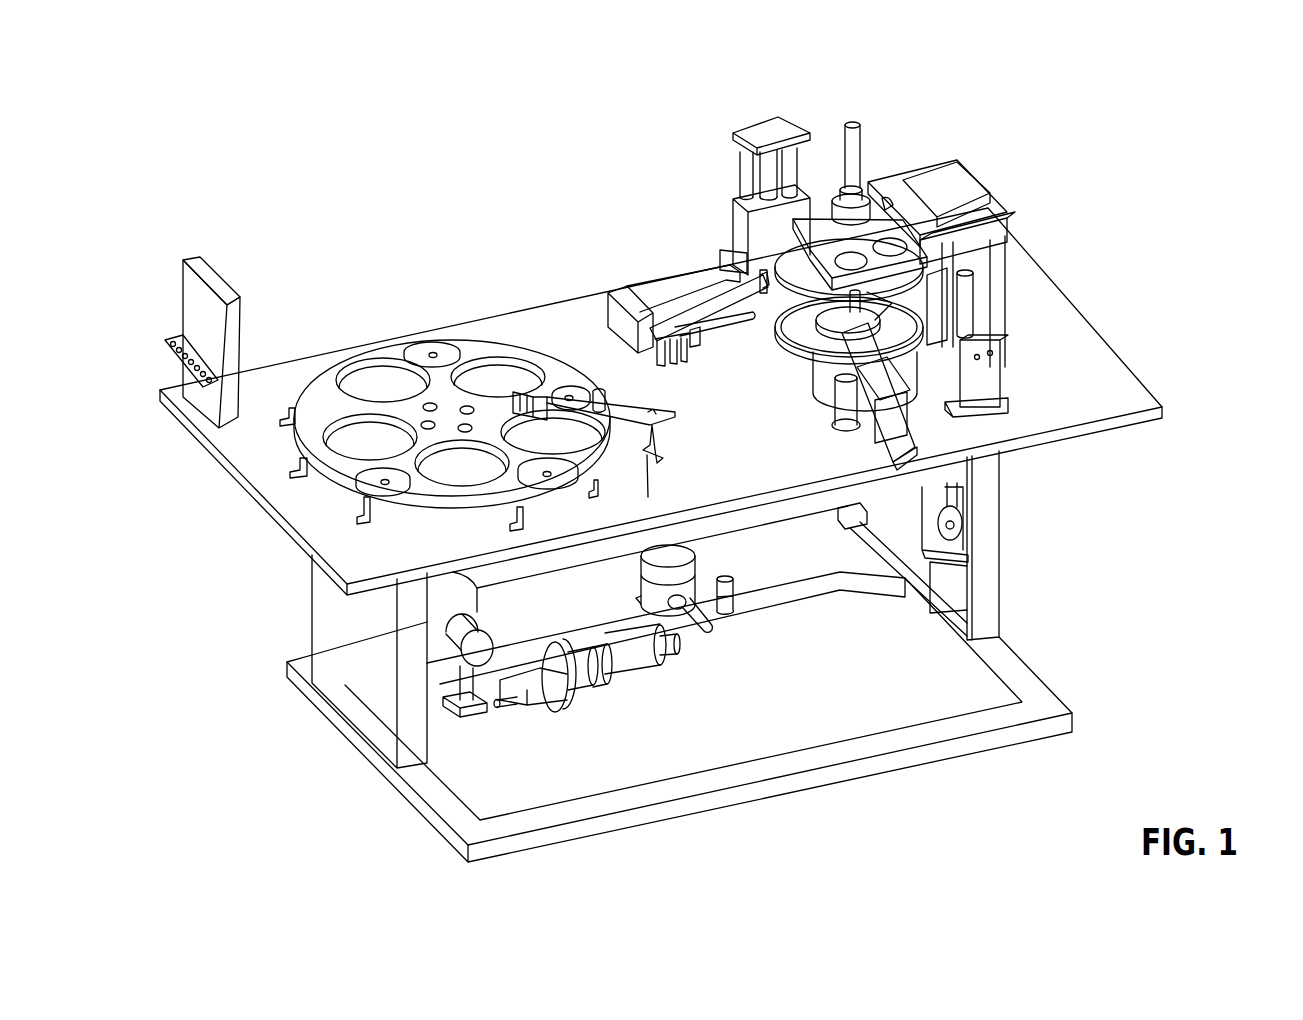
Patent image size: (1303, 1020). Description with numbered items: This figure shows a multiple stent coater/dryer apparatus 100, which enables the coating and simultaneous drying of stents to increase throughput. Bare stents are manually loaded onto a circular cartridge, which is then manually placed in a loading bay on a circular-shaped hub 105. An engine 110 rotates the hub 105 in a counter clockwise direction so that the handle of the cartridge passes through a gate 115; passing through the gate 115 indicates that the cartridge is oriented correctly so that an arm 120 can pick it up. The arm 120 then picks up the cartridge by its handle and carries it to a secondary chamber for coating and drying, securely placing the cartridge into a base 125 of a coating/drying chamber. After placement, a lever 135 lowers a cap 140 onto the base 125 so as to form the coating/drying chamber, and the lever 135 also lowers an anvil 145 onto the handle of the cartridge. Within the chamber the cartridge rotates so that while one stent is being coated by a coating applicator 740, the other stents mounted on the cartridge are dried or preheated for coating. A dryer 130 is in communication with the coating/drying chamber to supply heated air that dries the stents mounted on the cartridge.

The multiple stent coater/dryer apparatus 100 is at (436, 92).
The hub 105 is at (466, 346).
The engine 110 is at (470, 709).
The gate 115 is at (587, 408).
The arm 120 is at (695, 328).
The base 125 is at (940, 367).
The dryer 130 is at (625, 657).
The lever 135 is at (983, 294).
The cap 140 is at (990, 199).
The anvil 145 is at (860, 142).
The coating applicator 740 is at (920, 382).